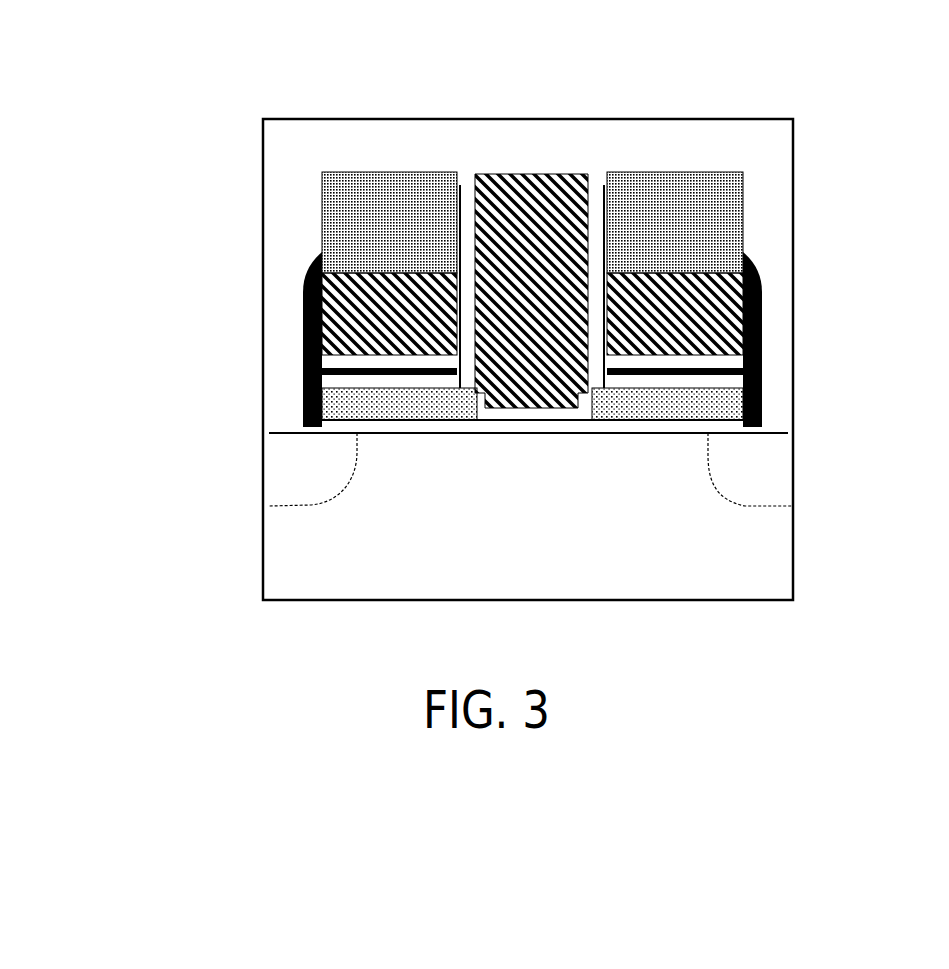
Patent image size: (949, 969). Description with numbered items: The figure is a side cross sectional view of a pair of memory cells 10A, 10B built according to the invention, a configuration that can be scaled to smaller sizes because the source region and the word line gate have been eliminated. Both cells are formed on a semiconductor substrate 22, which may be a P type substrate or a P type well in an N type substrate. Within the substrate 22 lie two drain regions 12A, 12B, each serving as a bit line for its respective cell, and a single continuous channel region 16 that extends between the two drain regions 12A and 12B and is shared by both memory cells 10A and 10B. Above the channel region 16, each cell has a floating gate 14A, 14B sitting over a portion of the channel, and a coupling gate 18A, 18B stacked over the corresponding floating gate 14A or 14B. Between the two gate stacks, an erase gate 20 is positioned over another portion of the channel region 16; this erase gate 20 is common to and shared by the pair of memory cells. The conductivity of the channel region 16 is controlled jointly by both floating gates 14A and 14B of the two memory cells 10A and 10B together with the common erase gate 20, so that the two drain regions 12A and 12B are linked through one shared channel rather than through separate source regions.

The memory cell 10A is at (292, 225).
The memory cell 10B is at (766, 215).
The drain region 12A is at (287, 477).
The drain region 12B is at (775, 464).
The floating gate 14A is at (337, 407).
The floating gate 14B is at (719, 402).
The channel region 16 is at (695, 465).
The coupling gate 18A is at (332, 298).
The coupling gate 18B is at (719, 288).
The erase gate 20 is at (526, 197).
The semiconductor substrate 22 is at (315, 574).